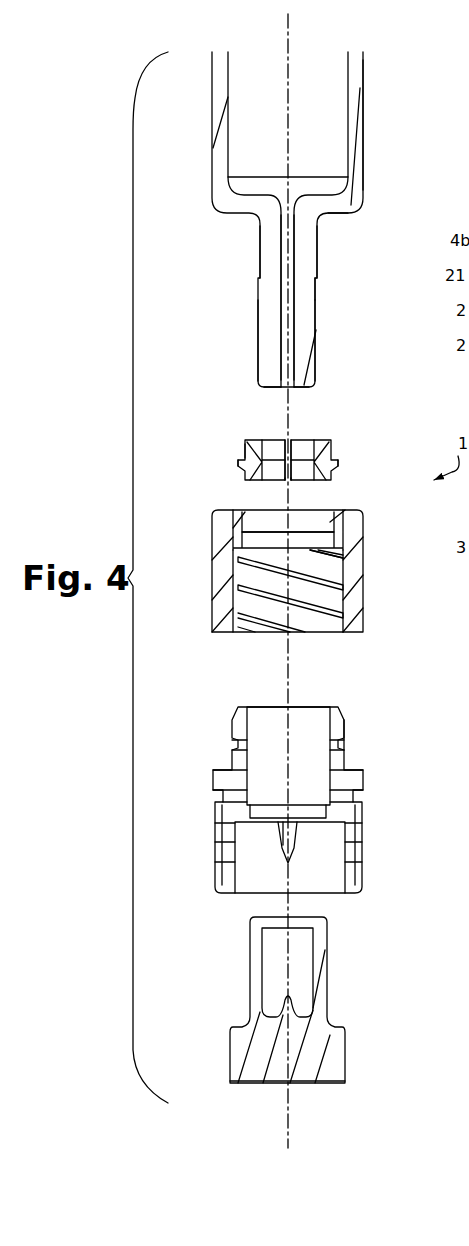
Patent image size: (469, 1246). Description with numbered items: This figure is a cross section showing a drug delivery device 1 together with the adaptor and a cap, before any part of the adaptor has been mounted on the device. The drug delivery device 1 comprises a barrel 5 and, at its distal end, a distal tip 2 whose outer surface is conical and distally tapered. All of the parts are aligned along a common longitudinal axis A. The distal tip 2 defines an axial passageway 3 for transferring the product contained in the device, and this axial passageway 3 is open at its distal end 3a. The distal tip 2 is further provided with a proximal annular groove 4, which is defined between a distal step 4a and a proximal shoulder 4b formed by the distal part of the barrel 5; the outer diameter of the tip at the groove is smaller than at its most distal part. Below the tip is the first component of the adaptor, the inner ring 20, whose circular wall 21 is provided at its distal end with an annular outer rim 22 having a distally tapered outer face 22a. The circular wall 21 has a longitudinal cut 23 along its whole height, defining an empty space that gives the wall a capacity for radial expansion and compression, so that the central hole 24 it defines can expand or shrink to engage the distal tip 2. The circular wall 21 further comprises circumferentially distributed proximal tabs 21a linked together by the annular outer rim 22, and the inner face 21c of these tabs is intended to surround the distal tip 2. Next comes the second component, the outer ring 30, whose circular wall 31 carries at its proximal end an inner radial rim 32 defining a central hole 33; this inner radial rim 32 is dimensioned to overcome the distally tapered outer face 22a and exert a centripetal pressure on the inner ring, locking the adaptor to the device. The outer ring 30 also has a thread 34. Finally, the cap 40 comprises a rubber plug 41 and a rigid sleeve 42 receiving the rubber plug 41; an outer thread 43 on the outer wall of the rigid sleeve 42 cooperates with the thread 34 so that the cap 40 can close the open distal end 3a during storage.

The longitudinal axis A is at (289, 50).
The drug delivery device 1 is at (384, 133).
The distal tip 2 is at (326, 347).
The axial passageway 3 is at (283, 302).
The distal end 3a is at (283, 387).
The proximal annular groove 4 is at (258, 256).
The distal step 4a is at (318, 278).
The proximal shoulder 4b is at (333, 215).
The barrel 5 is at (357, 86).
The inner ring 20 is at (300, 448).
The circular wall 21 is at (342, 440).
The proximal tabs 21a is at (245, 452).
The inner face 21c is at (300, 484).
The annular outer rim 22 is at (239, 474).
The distally tapered outer face 22a is at (337, 475).
The longitudinal cut 23 is at (283, 438).
The central hole 24 is at (298, 438).
The outer ring 30 is at (295, 581).
The circular wall 31 is at (209, 538).
The inner radial rim 32 is at (260, 505).
The central hole 33 is at (312, 548).
The thread 34 is at (258, 603).
The cap 40 is at (285, 895).
The rubber plug 41 is at (341, 1020).
The rigid sleeve 42 is at (203, 781).
The outer thread 43 is at (343, 750).